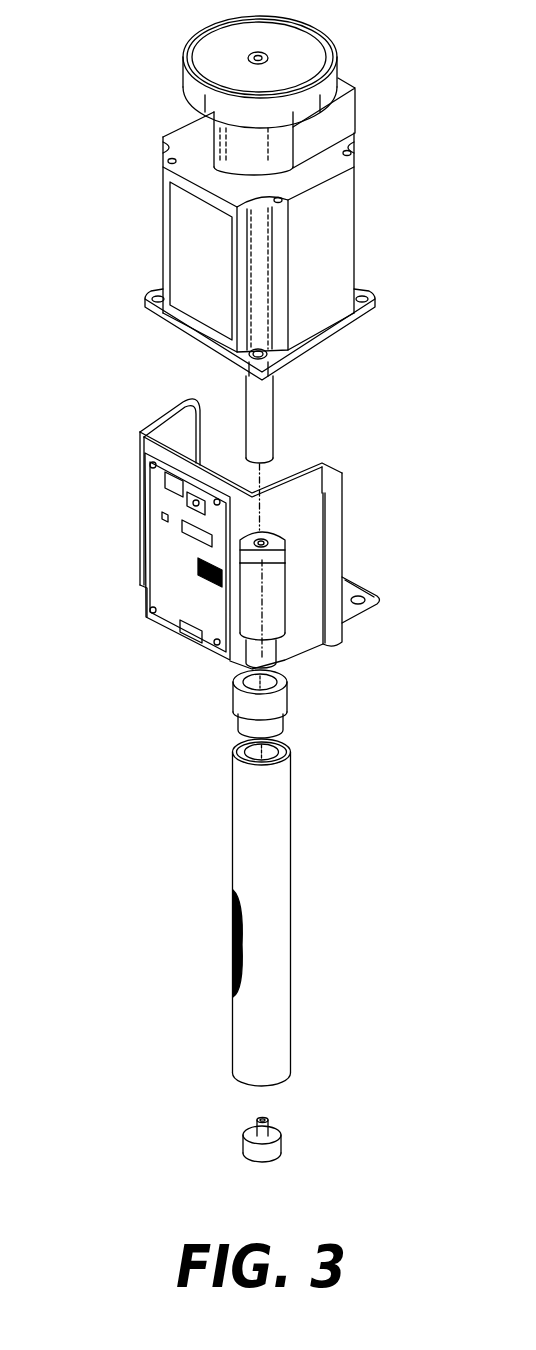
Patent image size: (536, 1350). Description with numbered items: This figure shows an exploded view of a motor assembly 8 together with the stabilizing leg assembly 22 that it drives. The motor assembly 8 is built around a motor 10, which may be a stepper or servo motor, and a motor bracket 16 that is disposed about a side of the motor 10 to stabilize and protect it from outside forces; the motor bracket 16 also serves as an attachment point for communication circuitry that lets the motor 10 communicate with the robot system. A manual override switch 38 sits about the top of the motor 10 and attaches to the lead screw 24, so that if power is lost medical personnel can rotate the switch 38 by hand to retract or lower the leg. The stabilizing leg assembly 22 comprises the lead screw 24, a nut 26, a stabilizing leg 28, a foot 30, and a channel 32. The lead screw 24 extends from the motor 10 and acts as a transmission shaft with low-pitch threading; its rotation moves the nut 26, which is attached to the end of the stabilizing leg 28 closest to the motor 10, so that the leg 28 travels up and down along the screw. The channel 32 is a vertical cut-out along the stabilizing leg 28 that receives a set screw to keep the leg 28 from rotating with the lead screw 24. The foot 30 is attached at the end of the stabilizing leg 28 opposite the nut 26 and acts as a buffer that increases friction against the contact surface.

The motor assembly 8 is at (133, 230).
The motor 10 is at (340, 187).
The motor bracket 16 is at (150, 430).
The stabilizing leg assembly 22 is at (211, 829).
The lead screw 24 is at (265, 420).
The nut 26 is at (247, 707).
The stabilizing leg 28 is at (267, 848).
The foot 30 is at (283, 1140).
The channel 32 is at (233, 952).
The manual override switch 38 is at (310, 47).